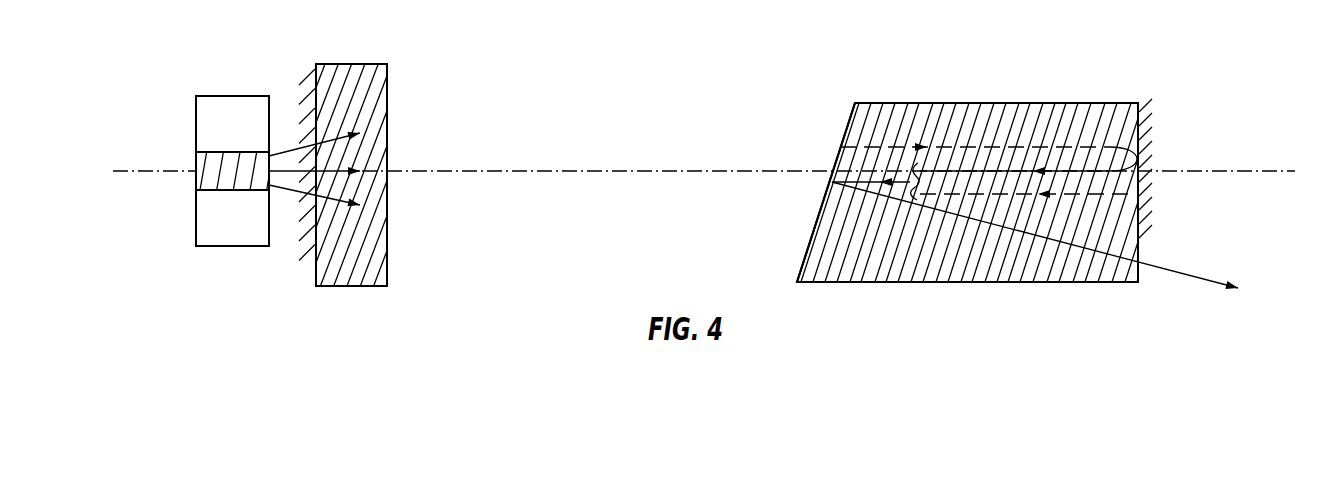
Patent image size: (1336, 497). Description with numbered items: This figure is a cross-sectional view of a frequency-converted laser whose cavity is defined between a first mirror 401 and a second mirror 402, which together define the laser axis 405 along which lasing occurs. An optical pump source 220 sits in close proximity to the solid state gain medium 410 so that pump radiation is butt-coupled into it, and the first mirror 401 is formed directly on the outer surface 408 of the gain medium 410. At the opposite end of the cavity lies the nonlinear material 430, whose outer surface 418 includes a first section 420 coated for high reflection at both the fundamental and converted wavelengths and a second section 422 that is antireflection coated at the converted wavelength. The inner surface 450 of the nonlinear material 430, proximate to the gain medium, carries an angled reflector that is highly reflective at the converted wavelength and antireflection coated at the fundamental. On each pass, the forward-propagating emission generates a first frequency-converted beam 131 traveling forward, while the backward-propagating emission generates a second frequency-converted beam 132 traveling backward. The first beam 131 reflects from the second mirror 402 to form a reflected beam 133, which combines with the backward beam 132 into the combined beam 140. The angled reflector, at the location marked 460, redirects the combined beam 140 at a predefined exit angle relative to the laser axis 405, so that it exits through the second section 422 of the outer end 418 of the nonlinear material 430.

The optical pump source 220 is at (228, 96).
The first mirror 401 is at (309, 77).
The gain medium 410 is at (377, 63).
The outer surface 408 is at (317, 287).
The optical axis 405 is at (532, 171).
The second mirror 402 is at (1170, 70).
The inner surface 450 is at (847, 125).
The nonlinear material 430 is at (995, 102).
The first section 420 is at (1148, 125).
The second section 422 is at (1140, 277).
The outer surface 418 is at (1138, 110).
The first frequency-converted beam 131 is at (1035, 147).
The reflected beam 133 is at (956, 170).
The second frequency converted beam 132 is at (940, 195).
The combined beam 140 is at (897, 183).
The reflection point 460 is at (867, 180).